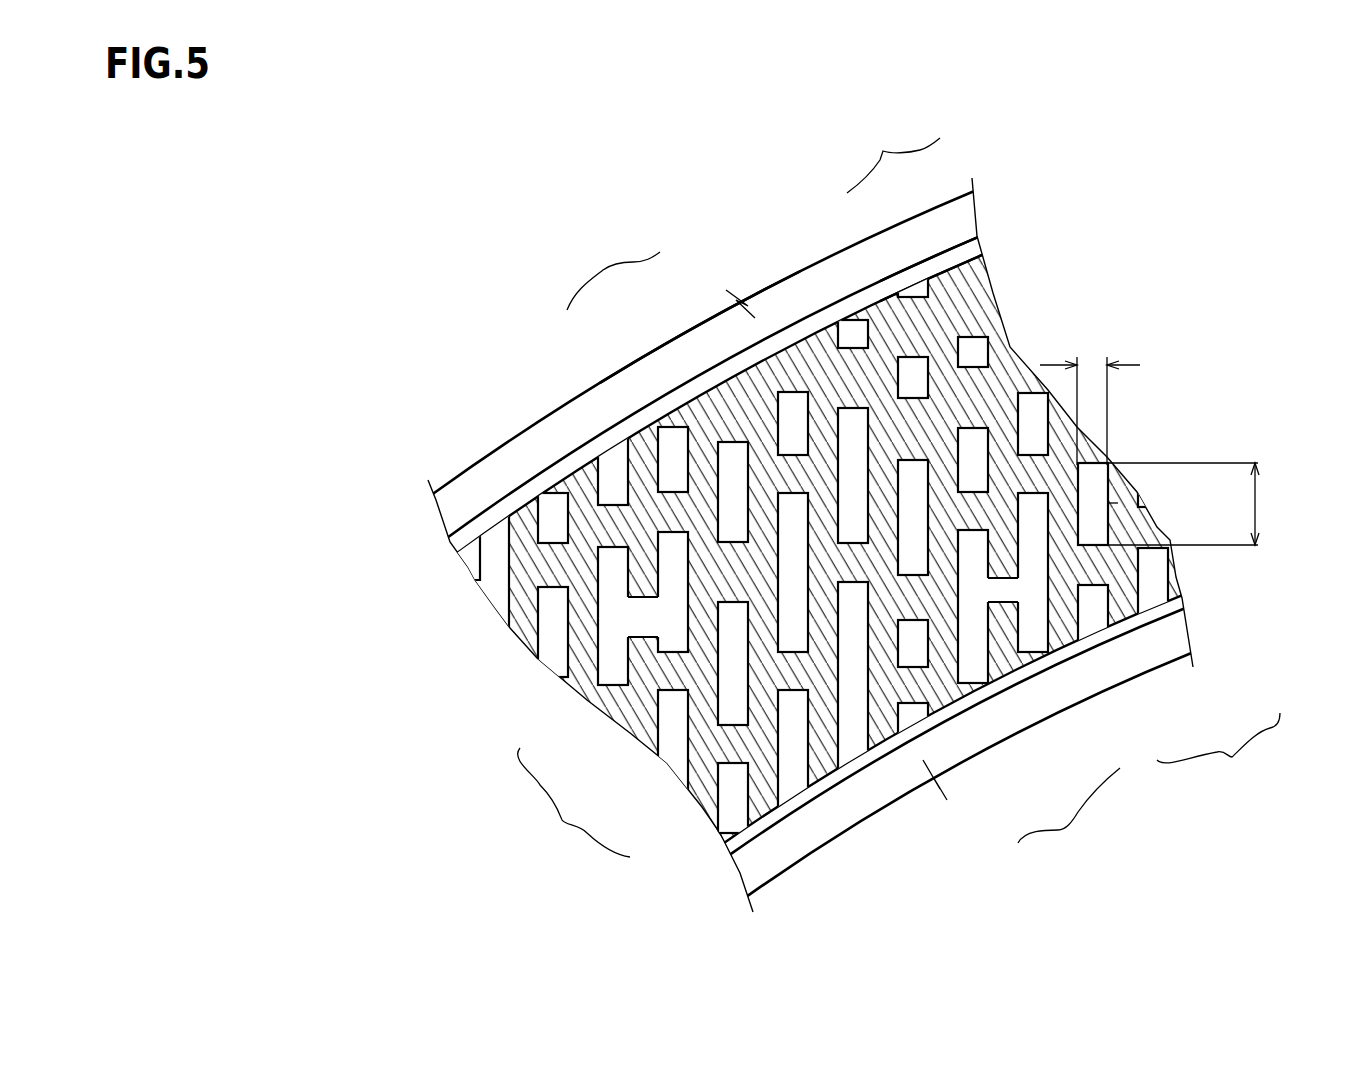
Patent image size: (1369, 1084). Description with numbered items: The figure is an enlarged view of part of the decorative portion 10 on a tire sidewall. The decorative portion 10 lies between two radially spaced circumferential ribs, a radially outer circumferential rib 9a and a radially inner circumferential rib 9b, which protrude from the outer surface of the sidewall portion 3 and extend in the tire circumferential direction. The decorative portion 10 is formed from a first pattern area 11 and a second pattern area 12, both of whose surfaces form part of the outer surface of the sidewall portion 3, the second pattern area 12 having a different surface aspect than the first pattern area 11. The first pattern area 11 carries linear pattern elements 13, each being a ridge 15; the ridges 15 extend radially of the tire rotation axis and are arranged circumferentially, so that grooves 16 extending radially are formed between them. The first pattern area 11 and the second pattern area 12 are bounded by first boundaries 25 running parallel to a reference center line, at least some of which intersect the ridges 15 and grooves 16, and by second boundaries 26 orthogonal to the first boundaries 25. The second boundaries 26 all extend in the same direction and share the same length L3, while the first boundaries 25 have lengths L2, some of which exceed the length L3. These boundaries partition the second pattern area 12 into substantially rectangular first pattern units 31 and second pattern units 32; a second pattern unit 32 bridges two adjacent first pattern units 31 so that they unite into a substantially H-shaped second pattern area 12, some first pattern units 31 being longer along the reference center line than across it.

The sidewall portion 3 is at (497, 493).
The radially outer circumferential rib 9a is at (580, 455).
The radially inner circumferential rib 9b is at (762, 825).
The decorative portion 10 is at (1010, 357).
The first pattern area 11 is at (803, 365).
The second pattern area 12 is at (899, 551).
The linear pattern element 13 is at (893, 154).
The ridge 15 is at (958, 302).
The groove 16 is at (957, 290).
The first boundary 25 is at (1137, 496).
The second boundary 26 is at (1088, 463).
The first pattern unit 31 is at (852, 337).
The second pattern unit 32 is at (650, 620).
The length of the first boundaries L2 is at (1202, 504).
The length of the second boundaries L3 is at (1090, 398).